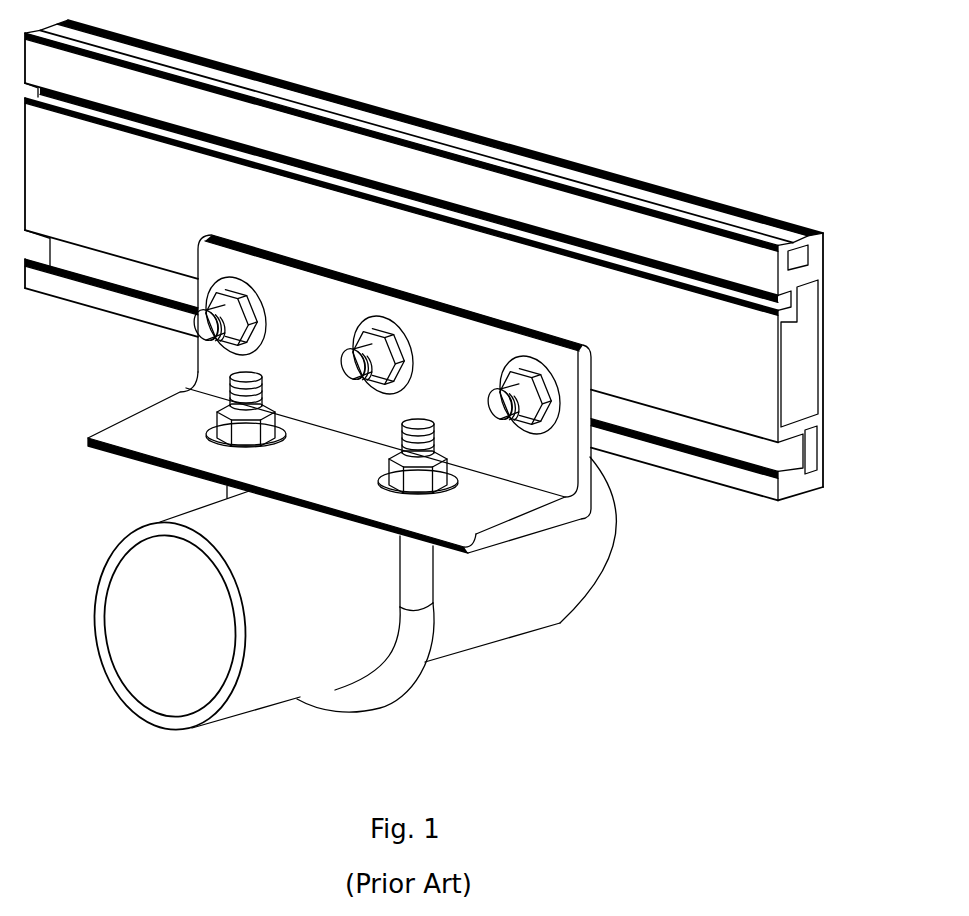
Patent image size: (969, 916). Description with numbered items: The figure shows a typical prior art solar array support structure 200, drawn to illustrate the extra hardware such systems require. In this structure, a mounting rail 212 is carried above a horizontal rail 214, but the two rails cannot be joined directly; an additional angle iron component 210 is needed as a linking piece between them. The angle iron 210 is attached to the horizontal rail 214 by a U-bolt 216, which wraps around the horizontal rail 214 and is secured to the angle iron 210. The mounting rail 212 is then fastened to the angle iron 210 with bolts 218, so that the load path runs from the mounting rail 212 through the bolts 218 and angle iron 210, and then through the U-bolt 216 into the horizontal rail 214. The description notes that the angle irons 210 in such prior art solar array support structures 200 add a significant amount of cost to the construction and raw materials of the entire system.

The solar array support structure 200 is at (432, 382).
The angle iron component 210 is at (158, 420).
The mounting rail 212 is at (805, 340).
The horizontal rail 214 is at (525, 580).
The U-bolt 216 is at (387, 680).
The bolts 218 is at (207, 312).